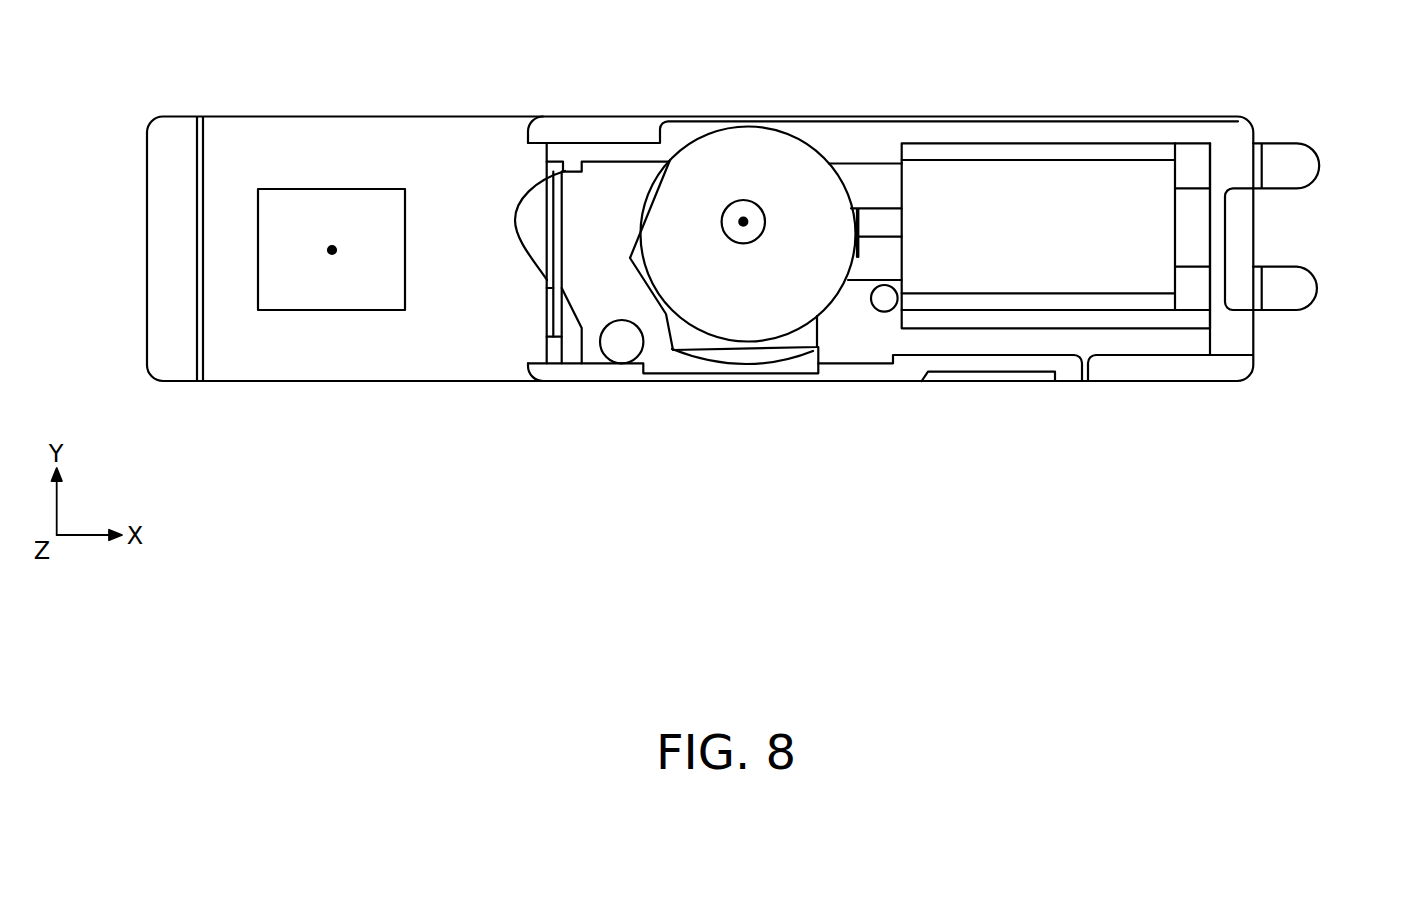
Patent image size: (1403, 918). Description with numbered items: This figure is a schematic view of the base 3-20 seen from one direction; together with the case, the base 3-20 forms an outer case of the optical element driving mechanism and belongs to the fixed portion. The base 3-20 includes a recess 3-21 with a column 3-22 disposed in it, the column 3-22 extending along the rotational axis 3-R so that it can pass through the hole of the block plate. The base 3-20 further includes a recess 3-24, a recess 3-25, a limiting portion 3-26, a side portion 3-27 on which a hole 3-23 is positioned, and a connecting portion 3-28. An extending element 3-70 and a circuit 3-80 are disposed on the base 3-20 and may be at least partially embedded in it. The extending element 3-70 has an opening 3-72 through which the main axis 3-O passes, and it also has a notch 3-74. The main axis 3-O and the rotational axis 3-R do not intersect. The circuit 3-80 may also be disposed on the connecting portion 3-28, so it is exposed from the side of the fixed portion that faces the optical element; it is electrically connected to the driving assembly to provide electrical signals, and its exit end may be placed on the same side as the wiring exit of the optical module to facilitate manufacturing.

The base 3-20 is at (1184, 110).
The recess 3-21 is at (810, 201).
The column 3-22 is at (735, 212).
The hole 3-23 is at (622, 347).
The recess 3-24 is at (1038, 223).
The recess 3-25 is at (878, 223).
The limiting portion 3-26 is at (883, 300).
The side portion 3-27 is at (628, 201).
The connecting portion 3-28 is at (1190, 180).
The extending element 3-70 is at (158, 247).
The opening 3-72 is at (300, 230).
The notch 3-74 is at (526, 212).
The circuit 3-80 is at (1307, 167).
The main axis 3-O is at (330, 266).
The rotational axis 3-R is at (743, 226).